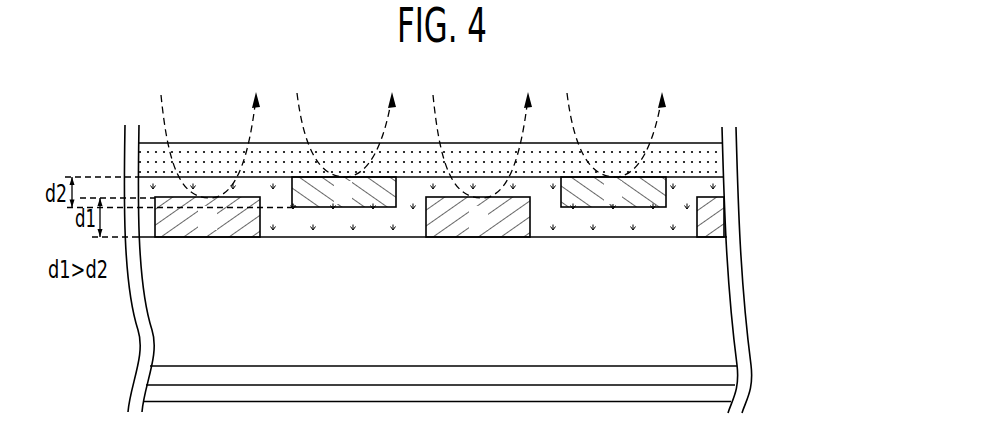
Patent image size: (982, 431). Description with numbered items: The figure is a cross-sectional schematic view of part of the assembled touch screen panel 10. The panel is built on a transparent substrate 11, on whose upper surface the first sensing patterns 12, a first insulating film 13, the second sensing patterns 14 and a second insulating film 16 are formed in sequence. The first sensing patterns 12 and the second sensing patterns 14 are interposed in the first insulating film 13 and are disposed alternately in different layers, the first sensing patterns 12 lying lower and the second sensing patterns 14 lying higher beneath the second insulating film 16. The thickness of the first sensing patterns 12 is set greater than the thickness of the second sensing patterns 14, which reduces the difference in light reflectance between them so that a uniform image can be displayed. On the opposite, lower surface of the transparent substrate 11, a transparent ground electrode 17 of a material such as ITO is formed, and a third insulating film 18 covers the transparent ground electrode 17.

The touch screen panel 10 is at (624, 102).
The transparent substrate 11 is at (720, 327).
The first sensing patterns 12 is at (512, 228).
The first insulating film 13 is at (678, 222).
The second sensing patterns 14 is at (665, 191).
The second insulating film 16 is at (710, 160).
The transparent ground electrode 17 is at (722, 375).
The third insulating film 18 is at (725, 395).